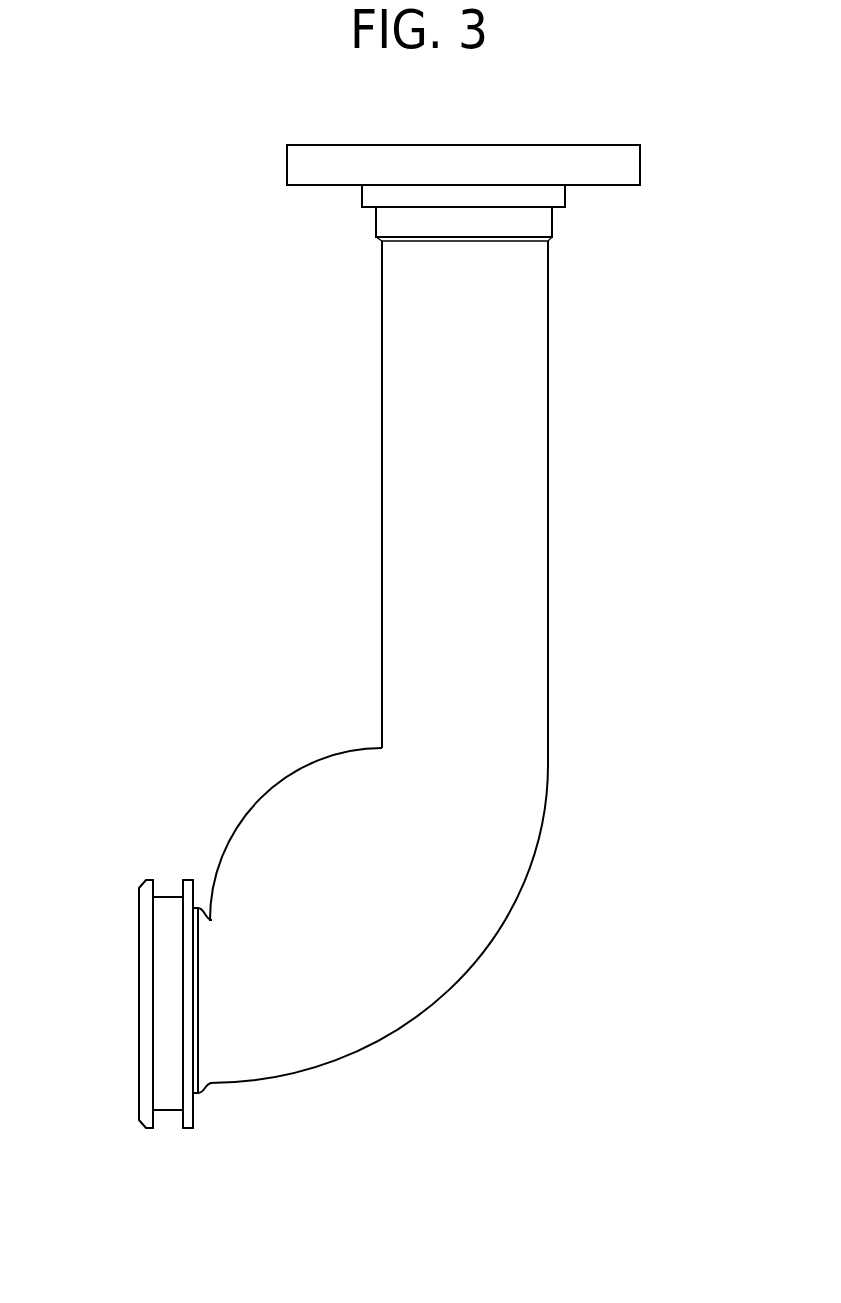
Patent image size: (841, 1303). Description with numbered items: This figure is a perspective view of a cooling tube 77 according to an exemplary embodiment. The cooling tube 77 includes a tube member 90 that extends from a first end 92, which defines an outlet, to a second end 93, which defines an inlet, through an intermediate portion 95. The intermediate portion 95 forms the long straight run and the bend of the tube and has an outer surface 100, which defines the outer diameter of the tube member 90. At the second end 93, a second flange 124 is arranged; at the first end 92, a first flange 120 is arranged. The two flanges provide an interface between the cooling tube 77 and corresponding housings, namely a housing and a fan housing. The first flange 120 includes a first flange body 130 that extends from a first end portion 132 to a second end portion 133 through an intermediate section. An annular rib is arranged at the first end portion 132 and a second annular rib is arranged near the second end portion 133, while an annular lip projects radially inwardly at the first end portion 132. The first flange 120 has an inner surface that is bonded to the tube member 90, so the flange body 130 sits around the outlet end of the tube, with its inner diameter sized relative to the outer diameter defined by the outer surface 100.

The cooling tube 77 is at (377, 662).
The tube member 90 is at (409, 662).
The first end 92 is at (211, 918).
The second end 93 is at (376, 223).
The intermediate portion 95 is at (549, 400).
The outer surface 100 is at (466, 703).
The first flange 120 is at (197, 990).
The second flange 124 is at (280, 128).
The first flange body 130 is at (169, 1128).
The first end portion 132 is at (140, 1122).
The second end portion 133 is at (207, 1087).